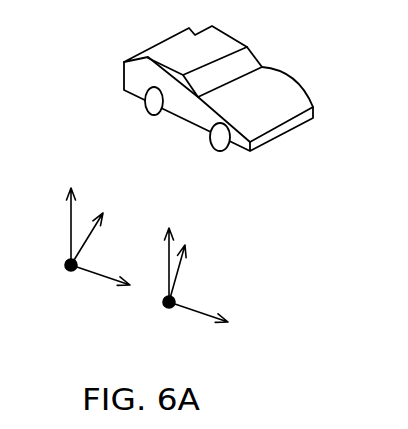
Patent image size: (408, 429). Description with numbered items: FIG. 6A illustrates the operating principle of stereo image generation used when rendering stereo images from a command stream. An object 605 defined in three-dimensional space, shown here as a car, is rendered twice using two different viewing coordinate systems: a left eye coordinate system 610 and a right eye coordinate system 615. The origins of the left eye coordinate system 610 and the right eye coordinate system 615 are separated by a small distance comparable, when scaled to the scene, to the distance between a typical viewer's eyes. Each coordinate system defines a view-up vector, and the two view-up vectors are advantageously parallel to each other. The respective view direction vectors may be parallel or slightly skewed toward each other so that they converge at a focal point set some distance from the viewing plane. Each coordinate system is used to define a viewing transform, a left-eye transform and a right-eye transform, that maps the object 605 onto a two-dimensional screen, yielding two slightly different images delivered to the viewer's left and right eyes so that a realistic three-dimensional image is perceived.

The object 605 is at (288, 74).
The left eye coordinate system 610 is at (68, 272).
The right eye coordinate system 615 is at (165, 310).